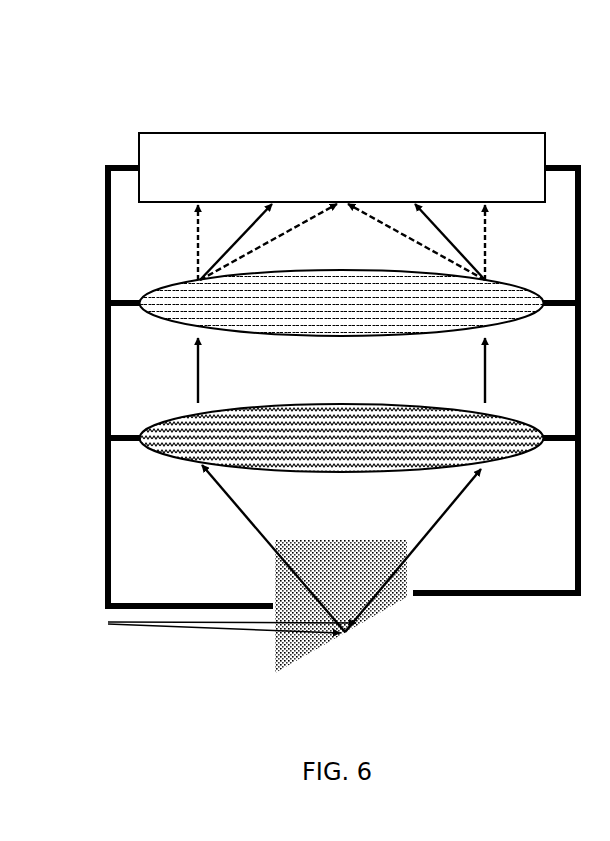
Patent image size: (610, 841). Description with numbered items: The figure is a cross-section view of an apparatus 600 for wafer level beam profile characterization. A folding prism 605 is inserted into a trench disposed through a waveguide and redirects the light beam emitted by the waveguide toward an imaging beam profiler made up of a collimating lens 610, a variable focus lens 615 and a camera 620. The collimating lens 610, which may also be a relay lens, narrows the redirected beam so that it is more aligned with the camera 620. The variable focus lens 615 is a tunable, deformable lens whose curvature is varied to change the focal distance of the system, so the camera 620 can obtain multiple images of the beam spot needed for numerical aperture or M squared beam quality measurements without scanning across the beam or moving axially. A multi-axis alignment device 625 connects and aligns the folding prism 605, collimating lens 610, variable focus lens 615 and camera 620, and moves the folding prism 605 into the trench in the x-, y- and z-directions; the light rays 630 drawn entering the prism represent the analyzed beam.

The apparatus 600 is at (124, 80).
The folding prism 605 is at (275, 655).
The collimating lens 610 is at (190, 415).
The variable focus lens 615 is at (190, 280).
The camera 620 is at (323, 133).
The multi-axis alignment device 625 is at (105, 235).
The illumination light 630 is at (94, 617).